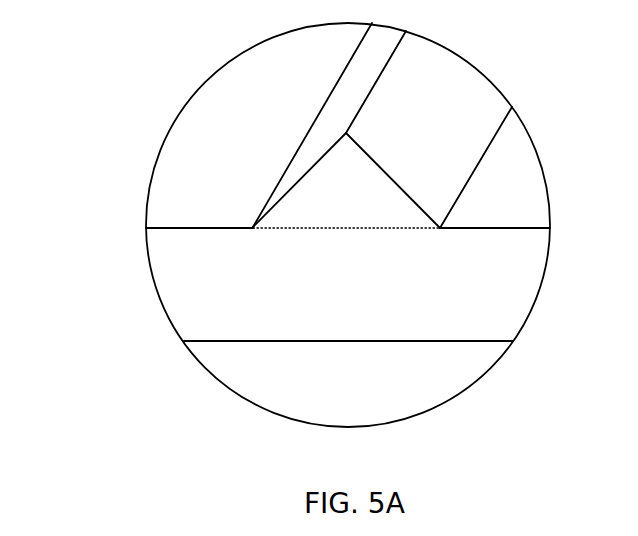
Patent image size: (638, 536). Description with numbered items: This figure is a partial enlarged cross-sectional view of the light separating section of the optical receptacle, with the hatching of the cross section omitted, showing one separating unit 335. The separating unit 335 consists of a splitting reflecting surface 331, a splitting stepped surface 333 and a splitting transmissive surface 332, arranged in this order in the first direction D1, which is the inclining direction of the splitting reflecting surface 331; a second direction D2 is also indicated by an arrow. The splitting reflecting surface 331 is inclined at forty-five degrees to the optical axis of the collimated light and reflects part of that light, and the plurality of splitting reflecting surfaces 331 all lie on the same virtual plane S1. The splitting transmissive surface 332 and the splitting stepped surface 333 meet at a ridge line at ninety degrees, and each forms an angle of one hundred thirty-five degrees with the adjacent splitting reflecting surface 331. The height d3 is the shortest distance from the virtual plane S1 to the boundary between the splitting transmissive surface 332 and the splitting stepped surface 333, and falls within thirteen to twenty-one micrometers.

The splitting reflecting surface 331 is at (238, 173).
The splitting transmissive surface 332 is at (413, 52).
The splitting stepped surface 333 is at (342, 97).
The separating unit 335 is at (86, 103).
The virtual plane S1 is at (280, 229).
The height of separating units d3 is at (346, 135).
The first direction D1 is at (150, 385).
The second direction D2 is at (115, 323).